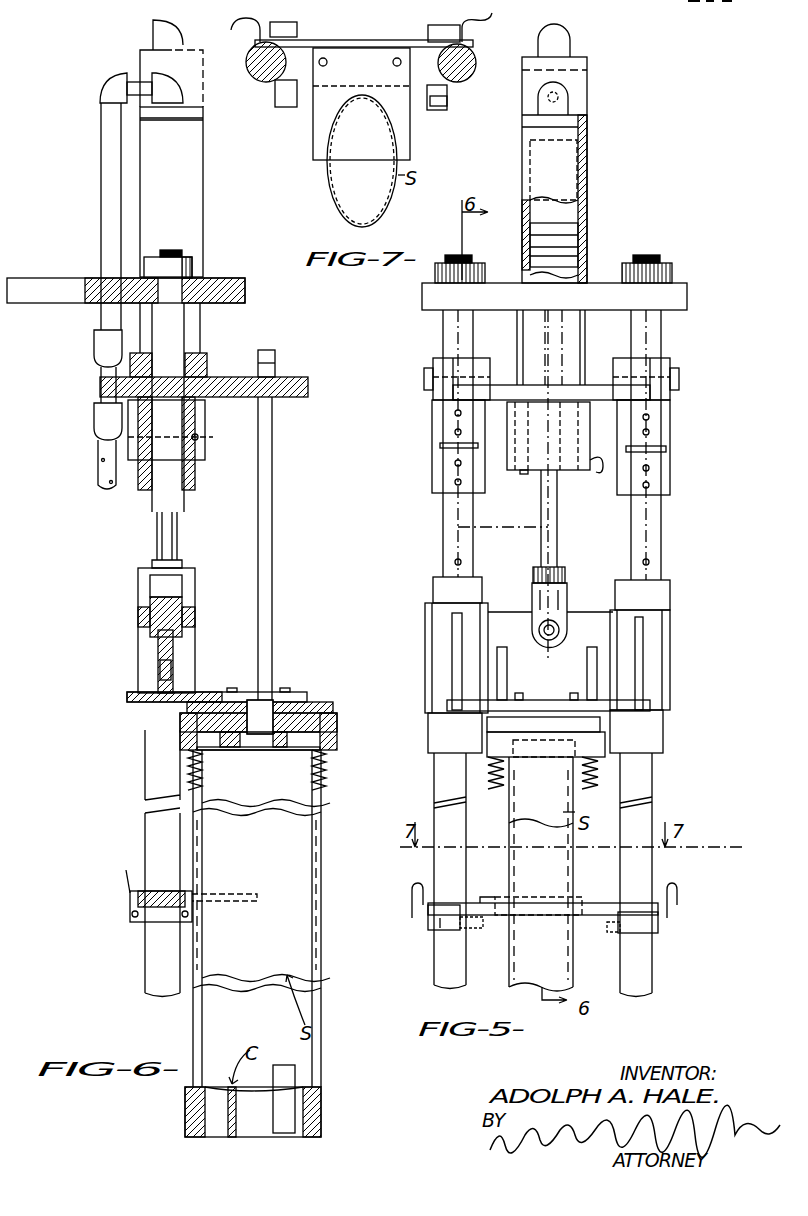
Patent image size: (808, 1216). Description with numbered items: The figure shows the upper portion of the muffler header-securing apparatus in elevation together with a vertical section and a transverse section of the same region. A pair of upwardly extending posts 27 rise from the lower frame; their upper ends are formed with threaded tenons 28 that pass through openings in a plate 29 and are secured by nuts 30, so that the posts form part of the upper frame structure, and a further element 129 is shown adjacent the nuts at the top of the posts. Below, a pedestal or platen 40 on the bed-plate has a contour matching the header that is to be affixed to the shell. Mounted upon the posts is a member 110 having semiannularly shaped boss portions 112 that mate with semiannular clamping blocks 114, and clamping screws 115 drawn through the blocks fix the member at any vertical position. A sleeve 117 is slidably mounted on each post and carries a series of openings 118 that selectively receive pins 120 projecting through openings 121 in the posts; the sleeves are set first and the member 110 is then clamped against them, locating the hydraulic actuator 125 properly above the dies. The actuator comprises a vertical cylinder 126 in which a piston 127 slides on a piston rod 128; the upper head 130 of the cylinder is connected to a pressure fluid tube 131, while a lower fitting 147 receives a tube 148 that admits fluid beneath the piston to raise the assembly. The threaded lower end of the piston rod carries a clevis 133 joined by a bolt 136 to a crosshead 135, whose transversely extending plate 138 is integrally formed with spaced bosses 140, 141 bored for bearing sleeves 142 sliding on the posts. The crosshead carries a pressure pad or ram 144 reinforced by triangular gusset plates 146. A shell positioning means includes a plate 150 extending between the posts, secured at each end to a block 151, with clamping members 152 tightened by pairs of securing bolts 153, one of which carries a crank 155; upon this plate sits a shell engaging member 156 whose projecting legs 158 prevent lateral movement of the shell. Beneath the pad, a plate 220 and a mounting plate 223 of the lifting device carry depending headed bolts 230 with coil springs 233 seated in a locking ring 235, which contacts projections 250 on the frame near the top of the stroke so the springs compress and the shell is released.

In FIG. 6, the posts or rods 27 is at (185, 322).
In FIG. 7, the posts or rods 27 is at (263, 84).
In FIG. 5, the posts or rods 27 is at (444, 508).
In FIG. 6, the threaded tenons 28 is at (190, 280).
In FIG. 5, the threaded tenons 28 is at (470, 262).
In FIG. 6, the plate or member 29 is at (243, 293).
In FIG. 6, the nuts 30 is at (186, 258).
In FIG. 5, the nuts 30 is at (480, 266).
In FIG. 6, the pedestal or platen 40 is at (190, 1100).
In FIG. 6, the member or plate 110 is at (310, 366).
In FIG. 5, the member or plate 110 is at (594, 388).
In FIG. 5, the semiannularly shaped boss portions 112 is at (478, 370).
In FIG. 5, the semiannular clamping plates or blocks 114 is at (438, 364).
In FIG. 6, the clamping screws 115 is at (196, 364).
In FIG. 5, the clamping screws 115 is at (432, 375).
In FIG. 6, the sleeve 117 is at (197, 486).
In FIG. 5, the sleeve 117 is at (434, 465).
In FIG. 5, the openings 118 is at (455, 431).
In FIG. 6, the pins or positioning members 120 is at (200, 440).
In FIG. 5, the pins or positioning members 120 is at (452, 445).
In FIG. 6, the openings 121 is at (196, 411).
In FIG. 5, the hydraulic actuator 125 is at (596, 174).
In FIG. 5, the cylinder 126 is at (590, 146).
In FIG. 5, the piston 127 is at (585, 222).
In FIG. 5, the piston rod 128 is at (590, 255).
In FIG. 5, the mounting plate 129 is at (597, 290).
In FIG. 5, the head 130 is at (572, 115).
In FIG. 6, the pressure fluid conveying duct or tube 131 is at (128, 80).
In FIG. 5, the clevis 133 is at (565, 592).
In FIG. 6, the crosshead 135 is at (155, 650).
In FIG. 5, the crosshead 135 is at (506, 607).
In FIG. 6, the bolt 136 is at (142, 605).
In FIG. 5, the bolt 136 is at (563, 612).
In FIG. 6, the transversely extending plate 138 is at (162, 668).
In FIG. 5, the transversely extending plate 138 is at (606, 633).
In FIG. 5, the boss 140 is at (665, 621).
In FIG. 5, the boss 141 is at (432, 621).
In FIG. 5, the bearing members or sleeves 142 is at (432, 580).
In FIG. 6, the pressure pad or ram member 144 is at (222, 664).
In FIG. 5, the pressure pad or ram member 144 is at (650, 706).
In FIG. 6, the gusset plates 146 is at (253, 657).
In FIG. 5, the gusset plates 146 is at (455, 637).
In FIG. 5, the fitting or head 147 is at (597, 472).
In FIG. 6, the fluid conveying duct or tube 148 is at (100, 415).
In FIG. 7, the plate 150 is at (390, 46).
In FIG. 5, the plate 150 is at (497, 916).
In FIG. 5, the block 151 is at (470, 940).
In FIG. 5, the clamping members 152 is at (450, 903).
In FIG. 7, the securing bolts 153 is at (436, 108).
In FIG. 5, the securing bolts 153 is at (448, 932).
In FIG. 6, the crank 155 is at (125, 876).
In FIG. 7, the crank 155 is at (485, 40).
In FIG. 5, the crank 155 is at (428, 925).
In FIG. 6, the shell engaging member 156 is at (172, 890).
In FIG. 7, the shell engaging member 156 is at (373, 78).
In FIG. 5, the shell engaging member 156 is at (580, 905).
In FIG. 6, the projecting legs 158 is at (232, 880).
In FIG. 7, the projecting legs 158 is at (313, 130).
In FIG. 5, the projecting legs 158 is at (497, 897).
In FIG. 6, the plate 220 is at (300, 705).
In FIG. 6, the mounting plate 223 is at (337, 730).
In FIG. 5, the mounting plate 223 is at (595, 738).
In FIG. 6, the headed members or bolts 230 is at (320, 795).
In FIG. 5, the headed members or bolts 230 is at (600, 782).
In FIG. 6, the expansive coil springs 233 is at (326, 772).
In FIG. 5, the expansive coil springs 233 is at (543, 773).
In FIG. 6, the locking ring or member 235 is at (330, 752).
In FIG. 5, the locking ring or member 235 is at (600, 754).
In FIG. 6, the projections 250 is at (258, 540).
In FIG. 5, the projections 250 is at (580, 671).